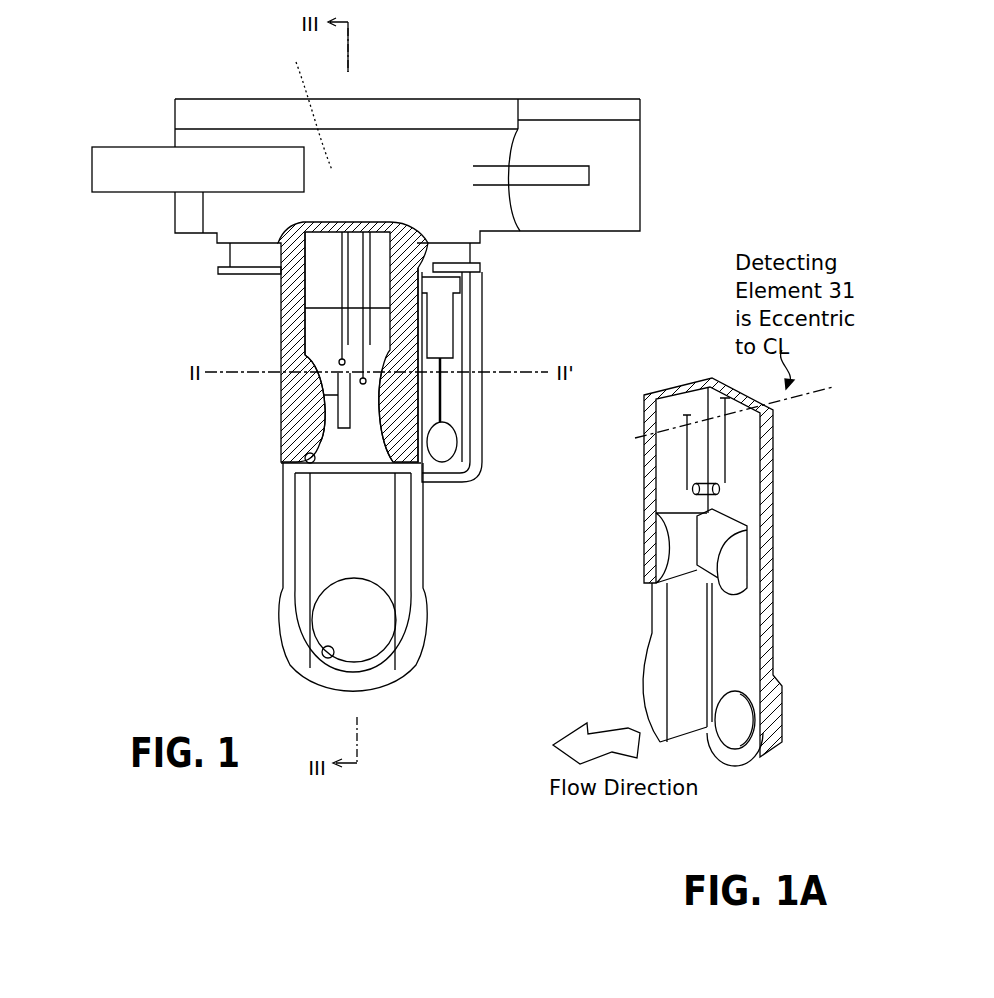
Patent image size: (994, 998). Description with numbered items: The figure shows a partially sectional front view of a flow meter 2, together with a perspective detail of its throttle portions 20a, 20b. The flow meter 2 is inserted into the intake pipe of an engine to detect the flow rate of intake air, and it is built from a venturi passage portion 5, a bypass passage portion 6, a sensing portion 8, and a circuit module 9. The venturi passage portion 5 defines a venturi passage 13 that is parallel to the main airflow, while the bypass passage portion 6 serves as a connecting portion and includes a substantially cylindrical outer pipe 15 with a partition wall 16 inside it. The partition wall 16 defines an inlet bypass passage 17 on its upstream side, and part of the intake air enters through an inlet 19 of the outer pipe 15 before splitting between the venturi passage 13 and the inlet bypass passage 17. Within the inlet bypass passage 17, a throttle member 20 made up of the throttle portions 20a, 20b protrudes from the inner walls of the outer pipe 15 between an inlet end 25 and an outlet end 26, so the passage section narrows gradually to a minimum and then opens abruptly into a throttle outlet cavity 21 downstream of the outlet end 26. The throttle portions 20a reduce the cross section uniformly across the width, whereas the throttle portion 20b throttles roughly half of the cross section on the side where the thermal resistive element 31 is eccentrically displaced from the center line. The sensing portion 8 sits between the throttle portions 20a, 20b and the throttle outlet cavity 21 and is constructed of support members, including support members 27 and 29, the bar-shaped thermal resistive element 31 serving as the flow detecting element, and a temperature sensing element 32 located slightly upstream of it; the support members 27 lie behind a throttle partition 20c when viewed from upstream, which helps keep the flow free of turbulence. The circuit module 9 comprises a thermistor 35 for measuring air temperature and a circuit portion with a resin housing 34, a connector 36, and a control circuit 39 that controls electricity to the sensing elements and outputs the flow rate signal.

In FIG. 1, the flow meter 2 is at (215, 99).
In FIG. 1, the venturi passage portion 5 is at (294, 601).
In FIG. 1, the bypass passage portion 6 is at (260, 443).
In FIG. 1, the sensing portion 8 is at (121, 365).
In FIG. 1, the circuit module 9 is at (440, 108).
In FIG. 1, the venturi passage 13 is at (323, 655).
In FIG. 1, the outer pipe 15 is at (283, 450).
In FIG. 1, the partition wall 16 is at (341, 528).
In FIG. 1, the inlet bypass passage 17 is at (345, 445).
In FIG. 1, the inlet 19 is at (402, 582).
In FIG. 1, the throttle member 20 is at (165, 233).
In FIG. 1, the throttle portion 20a is at (285, 455).
In FIG. 1A, the throttle portion 20a is at (660, 543).
In FIG. 1, the throttle portion 20b is at (287, 408).
In FIG. 1A, the throttle portion 20b is at (708, 556).
In FIG. 1, the throttle partition 20c is at (350, 402).
In FIG. 1A, the throttle partition 20c is at (722, 550).
In FIG. 1, the throttle outlet cavity 21 is at (327, 295).
In FIG. 1, the inlet end 25 is at (305, 456).
In FIG. 1, the outlet end 26 is at (305, 343).
In FIG. 1, the support member 27 is at (342, 323).
In FIG. 1, the support member 29 is at (365, 333).
In FIG. 1, the thermal resistive element 31 is at (338, 360).
In FIG. 1A, the thermal resistive element 31 is at (717, 493).
In FIG. 1, the temperature sensing element 32 is at (357, 383).
In FIG. 1, the housing 34 is at (175, 137).
In FIG. 1, the thermistor 35 is at (443, 445).
In FIG. 1, the connector 36 is at (568, 106).
In FIG. 1, the control circuit 39 is at (298, 104).